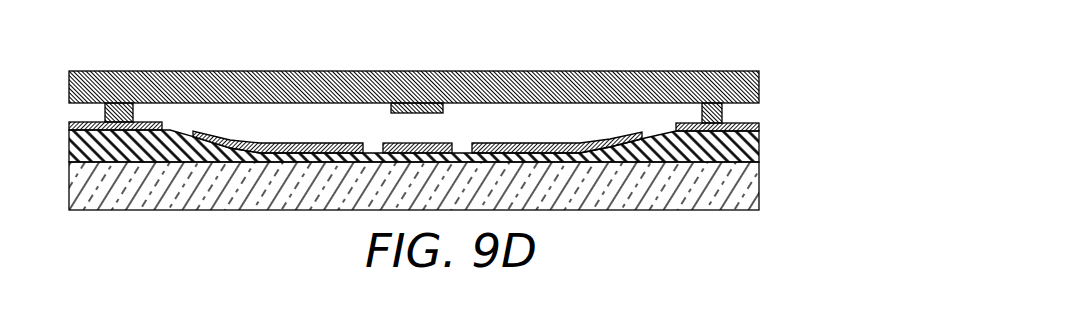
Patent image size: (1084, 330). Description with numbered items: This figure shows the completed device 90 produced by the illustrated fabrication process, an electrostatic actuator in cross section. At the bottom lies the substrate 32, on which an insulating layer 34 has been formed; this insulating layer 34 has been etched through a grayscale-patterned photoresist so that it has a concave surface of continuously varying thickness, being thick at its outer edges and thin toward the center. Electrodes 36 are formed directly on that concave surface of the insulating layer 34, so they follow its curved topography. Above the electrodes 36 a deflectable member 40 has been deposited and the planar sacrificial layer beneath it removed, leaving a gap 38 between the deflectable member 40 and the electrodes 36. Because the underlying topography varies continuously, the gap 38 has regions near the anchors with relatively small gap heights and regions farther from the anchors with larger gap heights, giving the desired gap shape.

The device 90 is at (111, 61).
The deflectable member 40 is at (623, 82).
The gap 38 is at (603, 133).
The electrode 36 is at (547, 142).
The insulating layer 34 is at (757, 145).
The substrate 32 is at (757, 197).